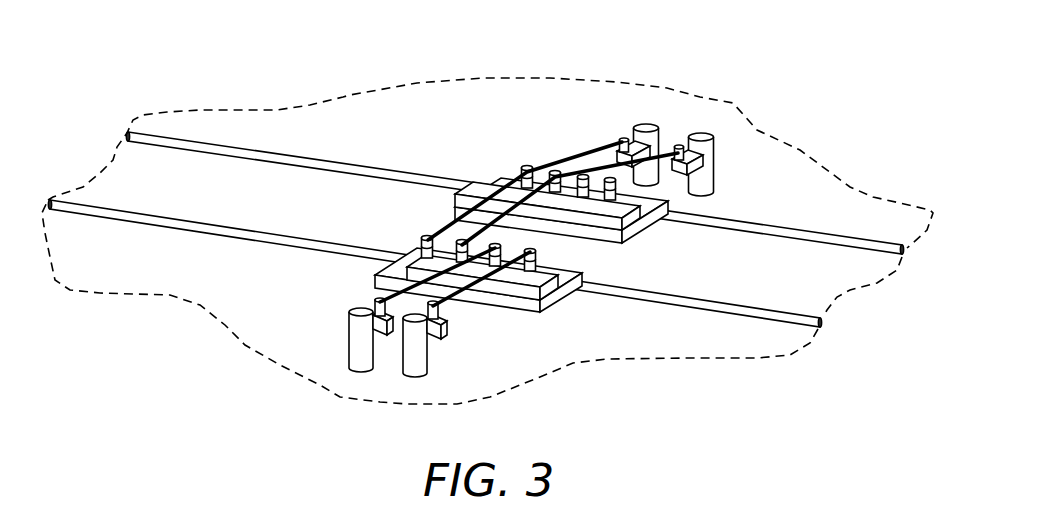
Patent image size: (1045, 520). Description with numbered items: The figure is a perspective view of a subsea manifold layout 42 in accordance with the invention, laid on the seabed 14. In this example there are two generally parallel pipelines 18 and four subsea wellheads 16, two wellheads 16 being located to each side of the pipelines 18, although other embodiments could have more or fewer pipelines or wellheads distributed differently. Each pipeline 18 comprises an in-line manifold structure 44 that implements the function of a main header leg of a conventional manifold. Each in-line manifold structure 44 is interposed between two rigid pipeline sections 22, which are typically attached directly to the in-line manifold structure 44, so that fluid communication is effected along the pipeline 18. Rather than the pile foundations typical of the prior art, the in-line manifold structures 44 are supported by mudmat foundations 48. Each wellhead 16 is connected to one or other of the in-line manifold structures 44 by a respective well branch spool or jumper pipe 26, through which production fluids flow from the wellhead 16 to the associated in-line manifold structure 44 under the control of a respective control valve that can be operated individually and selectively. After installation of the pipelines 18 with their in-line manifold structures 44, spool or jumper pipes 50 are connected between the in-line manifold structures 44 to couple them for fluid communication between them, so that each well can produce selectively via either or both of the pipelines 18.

The seabed 14 is at (232, 332).
The subsea wellhead 16 is at (700, 137).
The pipeline 18 is at (475, 261).
The rigid pipeline section 22 is at (341, 163).
The well branch spool or jumper pipe 26 is at (630, 174).
The subsea manifold layout 42 is at (445, 229).
The in-line manifold structure 44 is at (510, 231).
The mudmat foundation 48 is at (648, 233).
The spool or jumper pipe 50 is at (456, 210).